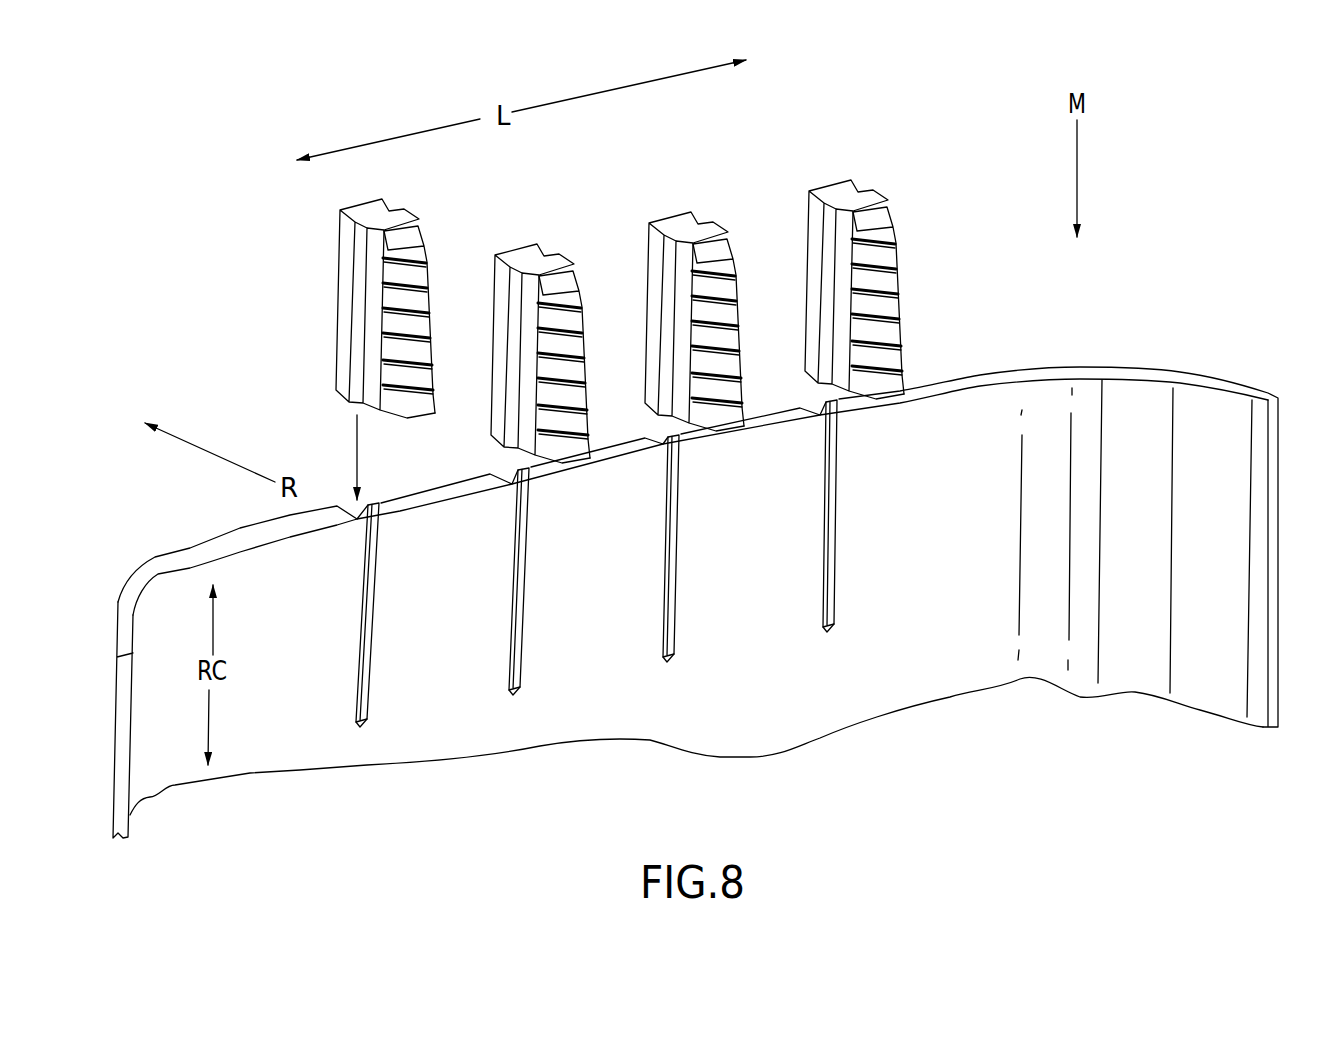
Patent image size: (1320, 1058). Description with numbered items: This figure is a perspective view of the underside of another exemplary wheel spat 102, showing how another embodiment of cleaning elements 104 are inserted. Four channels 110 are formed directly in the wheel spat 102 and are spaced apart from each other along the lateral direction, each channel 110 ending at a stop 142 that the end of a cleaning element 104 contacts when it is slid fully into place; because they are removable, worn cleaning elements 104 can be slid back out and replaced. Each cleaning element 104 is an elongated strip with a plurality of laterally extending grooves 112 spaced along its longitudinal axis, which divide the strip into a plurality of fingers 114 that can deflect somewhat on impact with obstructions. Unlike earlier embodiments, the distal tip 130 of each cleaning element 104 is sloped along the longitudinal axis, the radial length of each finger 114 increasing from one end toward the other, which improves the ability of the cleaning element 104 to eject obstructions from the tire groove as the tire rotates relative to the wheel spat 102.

The wheel spat 102 is at (1217, 408).
The cleaning element 104 is at (345, 238).
The channel 110 is at (372, 683).
The laterally extending groove 112 is at (443, 384).
The finger 114 is at (405, 277).
The distal tip 130 is at (432, 289).
The stop 142 is at (362, 735).